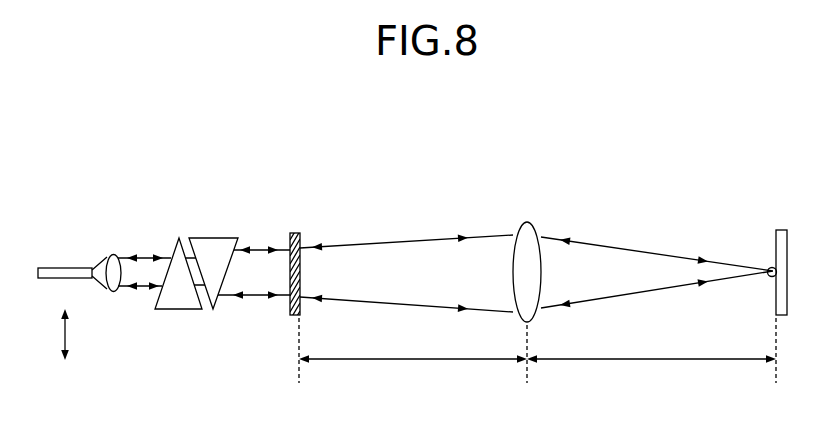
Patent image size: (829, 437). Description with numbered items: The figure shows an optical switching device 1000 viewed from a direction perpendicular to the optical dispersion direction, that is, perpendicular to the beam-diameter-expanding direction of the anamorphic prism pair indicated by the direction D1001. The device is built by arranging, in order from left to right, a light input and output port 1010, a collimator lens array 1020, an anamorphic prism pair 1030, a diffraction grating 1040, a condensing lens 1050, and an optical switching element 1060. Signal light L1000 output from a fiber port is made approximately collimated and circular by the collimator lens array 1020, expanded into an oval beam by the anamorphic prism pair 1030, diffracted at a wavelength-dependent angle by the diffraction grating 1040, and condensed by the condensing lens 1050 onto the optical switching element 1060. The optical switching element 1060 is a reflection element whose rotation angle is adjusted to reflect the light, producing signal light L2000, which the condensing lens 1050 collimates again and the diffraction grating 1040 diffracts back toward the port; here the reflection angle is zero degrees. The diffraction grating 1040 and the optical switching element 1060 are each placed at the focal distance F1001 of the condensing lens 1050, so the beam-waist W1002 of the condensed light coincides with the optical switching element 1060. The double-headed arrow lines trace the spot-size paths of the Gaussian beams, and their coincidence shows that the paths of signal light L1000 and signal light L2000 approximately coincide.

The optical switching device 1000 is at (722, 185).
The light input and output port 1010 is at (67, 250).
The collimator lens array 1020 is at (117, 240).
The anamorphic prism pair 1030 is at (208, 217).
The diffraction grating 1040 is at (296, 232).
The condensing lens 1050 is at (528, 210).
The optical switching element 1060 is at (782, 230).
The beam-waist W1002 is at (757, 278).
The signal light L1000 is at (445, 251).
The signal light L2000 is at (387, 242).
The direction D1001 is at (65, 332).
The focal distance F1001 is at (413, 360).